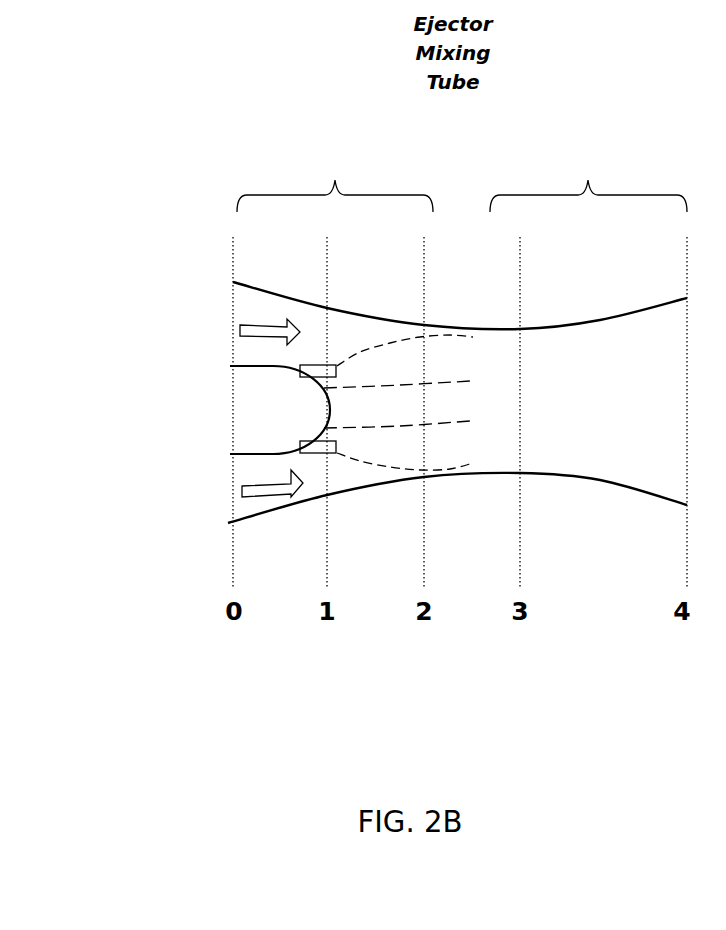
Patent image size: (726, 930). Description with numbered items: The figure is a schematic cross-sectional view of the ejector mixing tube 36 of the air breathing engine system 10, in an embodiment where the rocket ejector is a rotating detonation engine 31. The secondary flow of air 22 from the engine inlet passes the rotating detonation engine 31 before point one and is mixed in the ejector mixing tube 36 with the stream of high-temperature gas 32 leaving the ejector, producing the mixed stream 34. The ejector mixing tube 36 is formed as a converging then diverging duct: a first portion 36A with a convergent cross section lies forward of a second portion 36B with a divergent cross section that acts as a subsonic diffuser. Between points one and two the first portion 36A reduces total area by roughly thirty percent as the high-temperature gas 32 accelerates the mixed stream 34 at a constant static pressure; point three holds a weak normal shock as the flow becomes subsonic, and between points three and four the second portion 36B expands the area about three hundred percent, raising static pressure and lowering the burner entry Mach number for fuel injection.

The air breathing engine system 10 is at (61, 93).
The flow of air 22 is at (238, 318).
The rotating detonation engine 31 is at (300, 365).
The stream of high-temperature gas 32 is at (385, 422).
The mixed stream 34 is at (468, 412).
The ejector mixing tube 36 is at (472, 473).
The first portion 36A is at (335, 182).
The second portion 36B is at (588, 182).